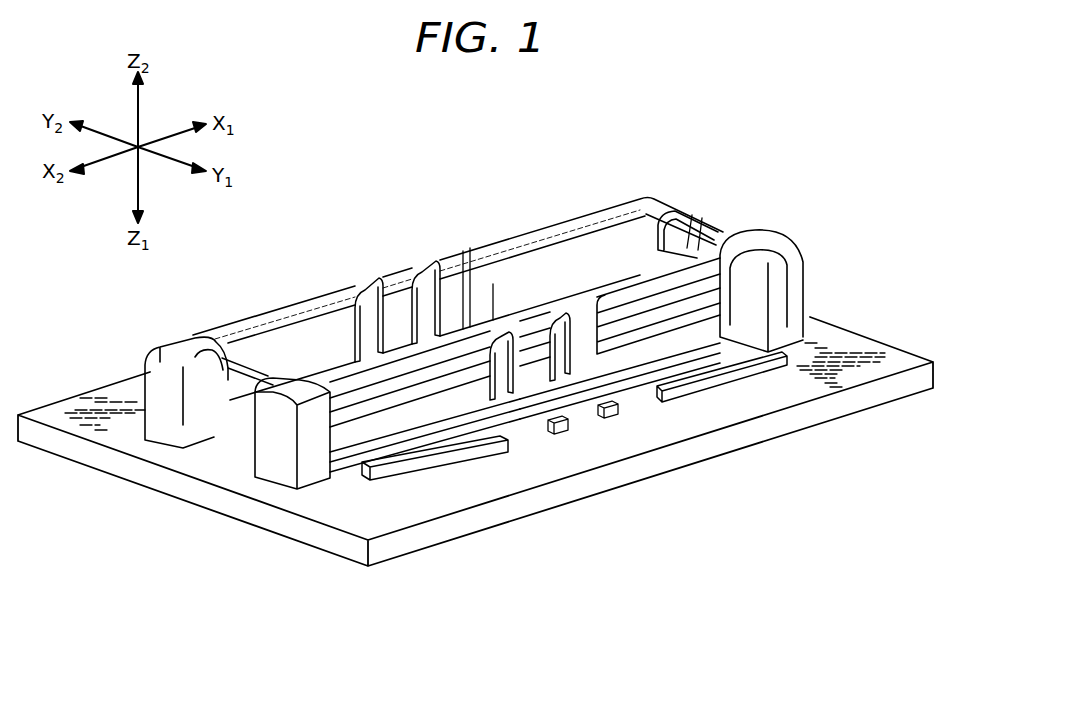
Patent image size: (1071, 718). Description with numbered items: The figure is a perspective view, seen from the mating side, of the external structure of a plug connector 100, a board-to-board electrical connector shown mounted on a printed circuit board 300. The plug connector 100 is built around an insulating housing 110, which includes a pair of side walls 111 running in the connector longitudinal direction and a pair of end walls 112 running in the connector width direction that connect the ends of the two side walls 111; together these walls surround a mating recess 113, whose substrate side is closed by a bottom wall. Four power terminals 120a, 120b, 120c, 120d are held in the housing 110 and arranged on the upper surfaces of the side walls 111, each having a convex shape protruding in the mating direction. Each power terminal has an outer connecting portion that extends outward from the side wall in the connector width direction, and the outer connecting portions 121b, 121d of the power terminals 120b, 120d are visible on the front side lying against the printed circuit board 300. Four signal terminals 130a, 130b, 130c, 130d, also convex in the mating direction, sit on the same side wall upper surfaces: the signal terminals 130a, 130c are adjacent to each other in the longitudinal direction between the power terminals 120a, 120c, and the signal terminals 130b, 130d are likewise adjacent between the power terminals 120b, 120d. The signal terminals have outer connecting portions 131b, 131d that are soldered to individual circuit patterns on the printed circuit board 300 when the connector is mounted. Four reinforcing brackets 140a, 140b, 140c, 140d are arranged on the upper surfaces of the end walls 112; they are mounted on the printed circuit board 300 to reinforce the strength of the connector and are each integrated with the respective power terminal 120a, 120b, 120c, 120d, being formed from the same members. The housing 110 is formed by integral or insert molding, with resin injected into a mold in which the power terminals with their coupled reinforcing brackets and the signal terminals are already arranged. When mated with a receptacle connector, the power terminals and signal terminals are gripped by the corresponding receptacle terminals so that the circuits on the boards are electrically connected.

The plug connector 100 is at (762, 122).
The insulating housing 110 is at (473, 364).
The side walls 111 is at (463, 249).
The end walls 112 is at (708, 216).
The mating recess 113 is at (497, 320).
The power terminal 120a is at (275, 318).
The power terminal 120b is at (410, 388).
The power terminal 120c is at (572, 232).
The power terminal 120d is at (712, 297).
The outer connecting portion 121b is at (460, 460).
The outer connecting portion 121d is at (762, 365).
The signal terminal 130a is at (378, 285).
The signal terminal 130b is at (527, 350).
The signal terminal 130c is at (434, 264).
The signal terminal 130d is at (575, 340).
The outer connecting portion 131b is at (563, 432).
The outer connecting portion 131d is at (608, 413).
The reinforcing bracket 140a is at (203, 400).
The reinforcing bracket 140b is at (240, 408).
The reinforcing bracket 140c is at (692, 218).
The reinforcing bracket 140d is at (738, 232).
The printed circuit board 300 is at (60, 408).